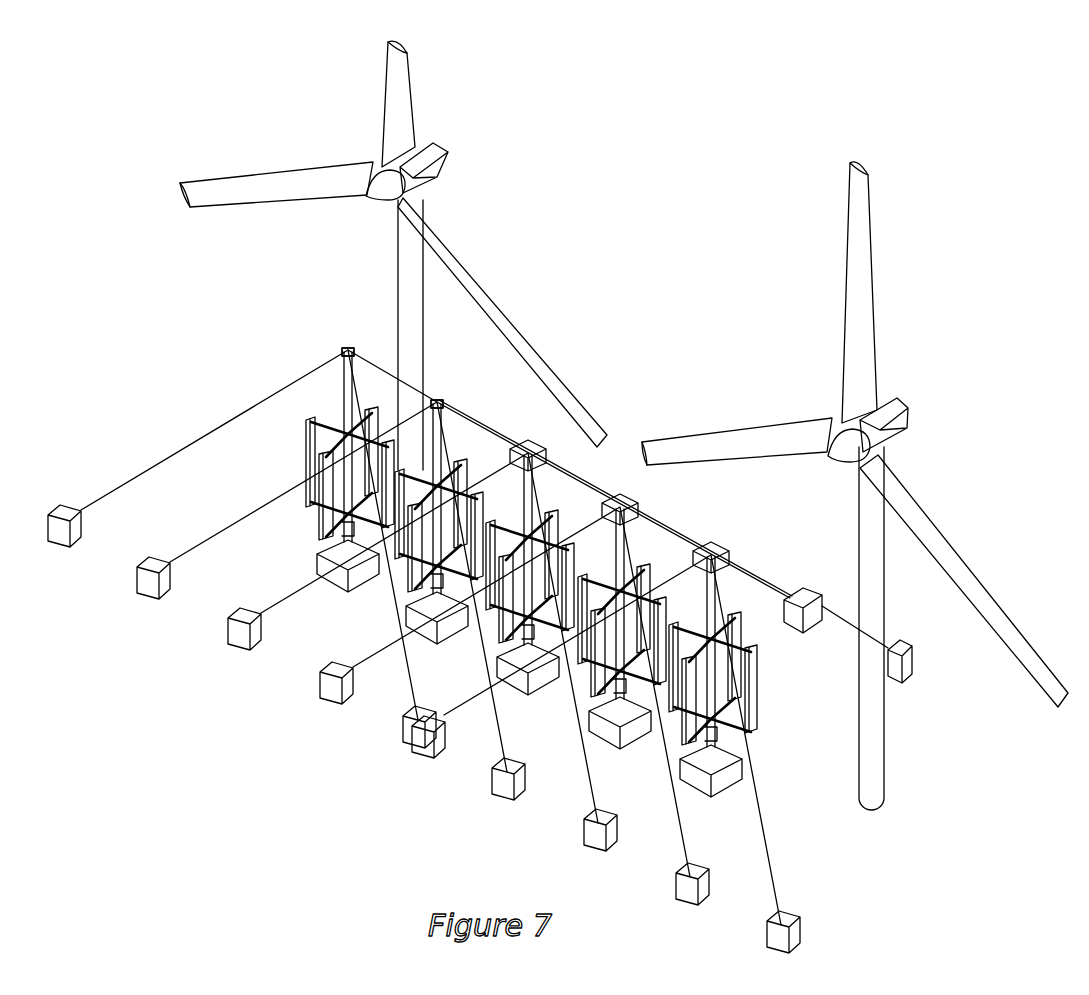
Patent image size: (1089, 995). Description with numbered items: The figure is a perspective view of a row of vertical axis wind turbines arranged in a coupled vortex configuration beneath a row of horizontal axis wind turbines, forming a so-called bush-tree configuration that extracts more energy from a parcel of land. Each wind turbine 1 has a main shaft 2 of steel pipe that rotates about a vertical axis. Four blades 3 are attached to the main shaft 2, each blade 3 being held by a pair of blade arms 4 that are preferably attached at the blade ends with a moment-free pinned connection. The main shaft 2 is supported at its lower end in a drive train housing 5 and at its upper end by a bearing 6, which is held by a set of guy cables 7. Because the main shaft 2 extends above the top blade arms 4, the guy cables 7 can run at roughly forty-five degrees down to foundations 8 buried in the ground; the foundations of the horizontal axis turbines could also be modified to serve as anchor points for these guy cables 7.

The wind turbine 1 is at (316, 348).
The main shaft 2 is at (346, 373).
The blade 3 is at (515, 583).
The blade arm 4 is at (313, 430).
The drive train housing 5 is at (356, 582).
The bearing 6 is at (347, 346).
The guy cable 7 is at (178, 446).
The foundation 8 is at (58, 512).